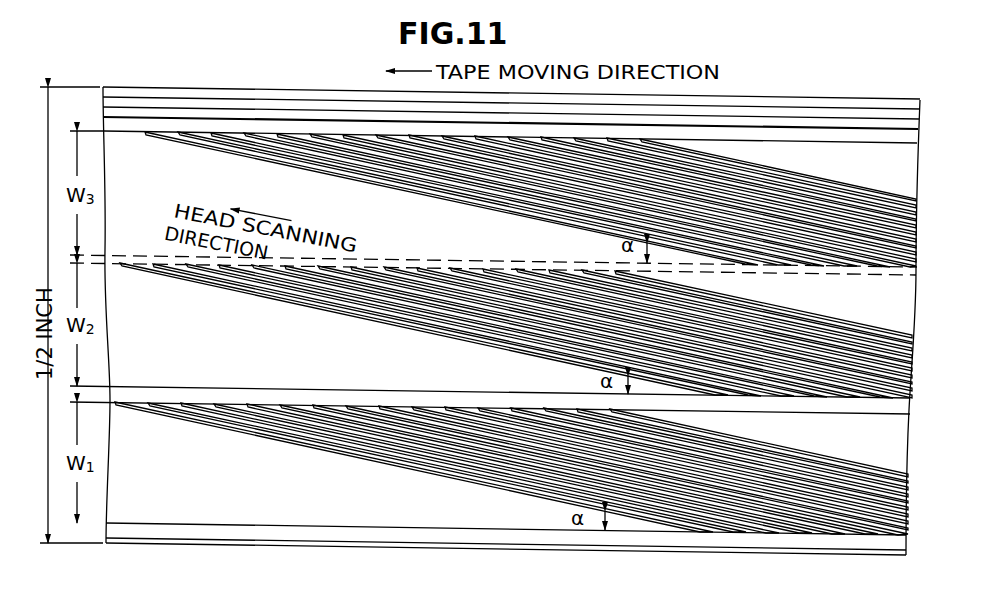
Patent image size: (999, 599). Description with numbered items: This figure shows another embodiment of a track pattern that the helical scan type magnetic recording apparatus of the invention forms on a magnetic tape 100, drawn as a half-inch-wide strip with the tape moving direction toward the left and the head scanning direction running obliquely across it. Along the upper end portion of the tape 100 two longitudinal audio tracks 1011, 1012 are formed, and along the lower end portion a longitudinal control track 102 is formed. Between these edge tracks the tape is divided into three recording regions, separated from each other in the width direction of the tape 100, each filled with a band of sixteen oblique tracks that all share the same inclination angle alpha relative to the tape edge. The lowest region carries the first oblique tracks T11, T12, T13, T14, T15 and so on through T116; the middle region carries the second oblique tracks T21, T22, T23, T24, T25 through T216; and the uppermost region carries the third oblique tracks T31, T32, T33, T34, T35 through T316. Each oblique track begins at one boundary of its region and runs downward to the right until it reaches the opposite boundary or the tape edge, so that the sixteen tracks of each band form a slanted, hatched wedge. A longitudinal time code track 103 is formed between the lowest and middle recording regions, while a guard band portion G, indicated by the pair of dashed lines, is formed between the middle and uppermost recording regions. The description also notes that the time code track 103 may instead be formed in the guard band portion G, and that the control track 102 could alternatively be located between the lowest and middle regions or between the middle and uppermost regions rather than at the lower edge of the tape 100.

The magnetic tape 100 is at (912, 175).
The audio track 1011 is at (917, 133).
The audio track 1012 is at (806, 106).
The control track 102 is at (900, 545).
The time code track 103 is at (902, 404).
The guard band portion G is at (918, 266).
The first oblique track T11 is at (192, 432).
The first oblique track T12 is at (237, 436).
The first oblique track T13 is at (285, 440).
The first oblique track T14 is at (333, 445).
The first oblique track T15 is at (378, 450).
The first oblique track T116 is at (786, 455).
The second oblique track T21 is at (220, 280).
The second oblique track T22 is at (268, 291).
The second oblique track T23 is at (312, 296).
The second oblique track T24 is at (360, 303).
The second oblique track T25 is at (405, 310).
The second oblique track T216 is at (803, 313).
The third oblique track T31 is at (206, 148).
The third oblique track T32 is at (253, 150).
The third oblique track T33 is at (300, 155).
The third oblique track T34 is at (347, 158).
The third oblique track T35 is at (387, 161).
The third oblique track T316 is at (791, 172).